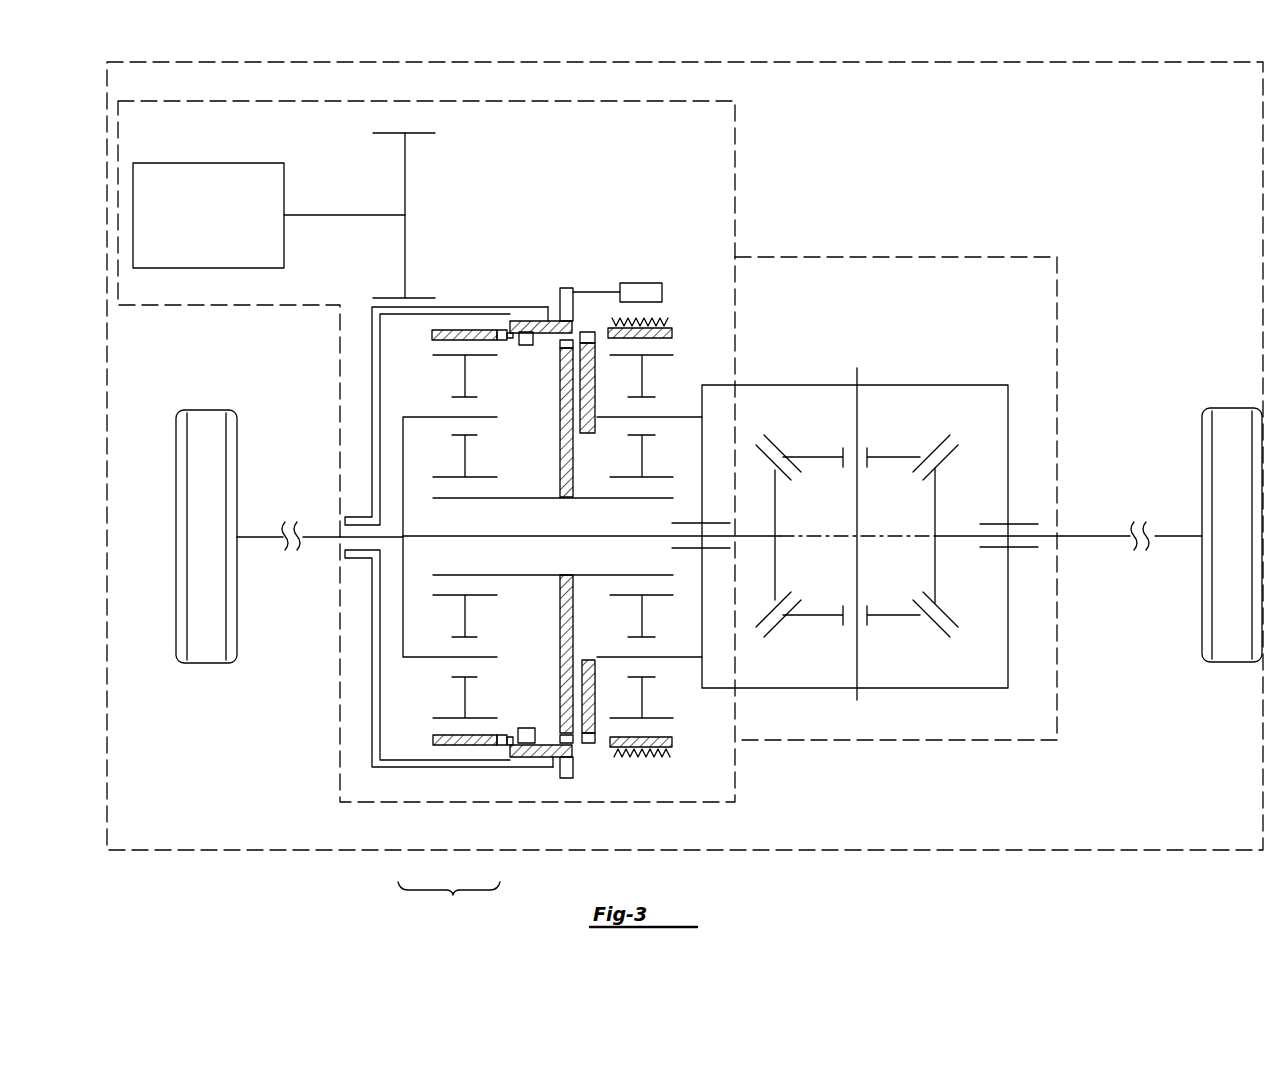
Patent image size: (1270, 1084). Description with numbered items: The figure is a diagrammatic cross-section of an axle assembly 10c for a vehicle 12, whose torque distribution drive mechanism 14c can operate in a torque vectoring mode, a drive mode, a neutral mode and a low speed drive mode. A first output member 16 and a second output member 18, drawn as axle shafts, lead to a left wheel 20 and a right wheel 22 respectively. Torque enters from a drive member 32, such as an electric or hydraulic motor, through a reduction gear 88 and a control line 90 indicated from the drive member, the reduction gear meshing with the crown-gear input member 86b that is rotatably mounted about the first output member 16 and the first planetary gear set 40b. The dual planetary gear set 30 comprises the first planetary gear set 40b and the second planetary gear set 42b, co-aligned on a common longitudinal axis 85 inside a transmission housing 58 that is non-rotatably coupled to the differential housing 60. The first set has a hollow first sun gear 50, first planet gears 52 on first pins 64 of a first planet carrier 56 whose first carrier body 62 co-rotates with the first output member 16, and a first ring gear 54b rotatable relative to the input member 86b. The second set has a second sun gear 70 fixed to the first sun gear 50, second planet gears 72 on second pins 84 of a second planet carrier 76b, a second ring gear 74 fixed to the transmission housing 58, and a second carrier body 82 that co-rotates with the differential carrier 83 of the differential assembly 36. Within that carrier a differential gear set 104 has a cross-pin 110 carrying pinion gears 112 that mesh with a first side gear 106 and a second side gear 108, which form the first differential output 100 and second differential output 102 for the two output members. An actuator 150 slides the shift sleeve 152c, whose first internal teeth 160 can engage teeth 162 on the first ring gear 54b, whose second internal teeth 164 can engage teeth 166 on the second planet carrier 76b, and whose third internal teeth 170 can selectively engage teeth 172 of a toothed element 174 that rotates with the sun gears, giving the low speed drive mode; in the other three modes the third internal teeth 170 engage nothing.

The axle assembly 10c is at (1157, 430).
The vehicle 12 is at (1165, 852).
The torque distribution drive mechanism 14c is at (340, 718).
The first output member 16 is at (255, 540).
The second output member 18 is at (1097, 537).
The left wheel 20 is at (207, 663).
The right wheel 22 is at (1230, 662).
The dual planetary gear set 30 is at (449, 903).
The drive member 32 is at (208, 270).
The differential assembly 36 is at (1016, 363).
The first planetary gear set 40b is at (460, 695).
The second planetary gear set 42b is at (590, 747).
The first sun gear 50 is at (470, 498).
The first planet gears 52 is at (465, 455).
The first ring gear 54b is at (448, 330).
The first planet carrier 56 is at (403, 445).
The transmission housing 58 is at (735, 167).
The differential housing 60 is at (1027, 257).
The first carrier body 62 is at (415, 557).
The first pins 64 is at (437, 417).
The second sun gear 70 is at (635, 498).
The second planet gears 72 is at (643, 698).
The second ring gear 74 is at (640, 338).
The second planet carrier 76b is at (587, 433).
The second carrier body 82 is at (702, 488).
The differential carrier 83 is at (1008, 440).
The second pins 84 is at (660, 417).
The common longitudinal axis 85 is at (893, 535).
The input member 86b is at (372, 375).
The reduction gear 88 is at (405, 183).
The control line 90 is at (355, 213).
The first differential output 100 is at (775, 565).
The second differential output 102 is at (937, 572).
The differential gear set 104 is at (912, 415).
The first side gear 106 is at (778, 552).
The second side gear 108 is at (933, 558).
The cross-pin 110 is at (857, 372).
The pinion gears 112 is at (893, 457).
The actuator 150 is at (602, 282).
The shift sleeve 152c is at (540, 321).
The first internal teeth 160 is at (512, 345).
The teeth 162 is at (503, 735).
The second internal teeth 164 is at (553, 740).
The teeth 166 is at (590, 337).
The third internal teeth 170 is at (527, 728).
The teeth 172 is at (573, 725).
The toothed element 174 is at (590, 580).